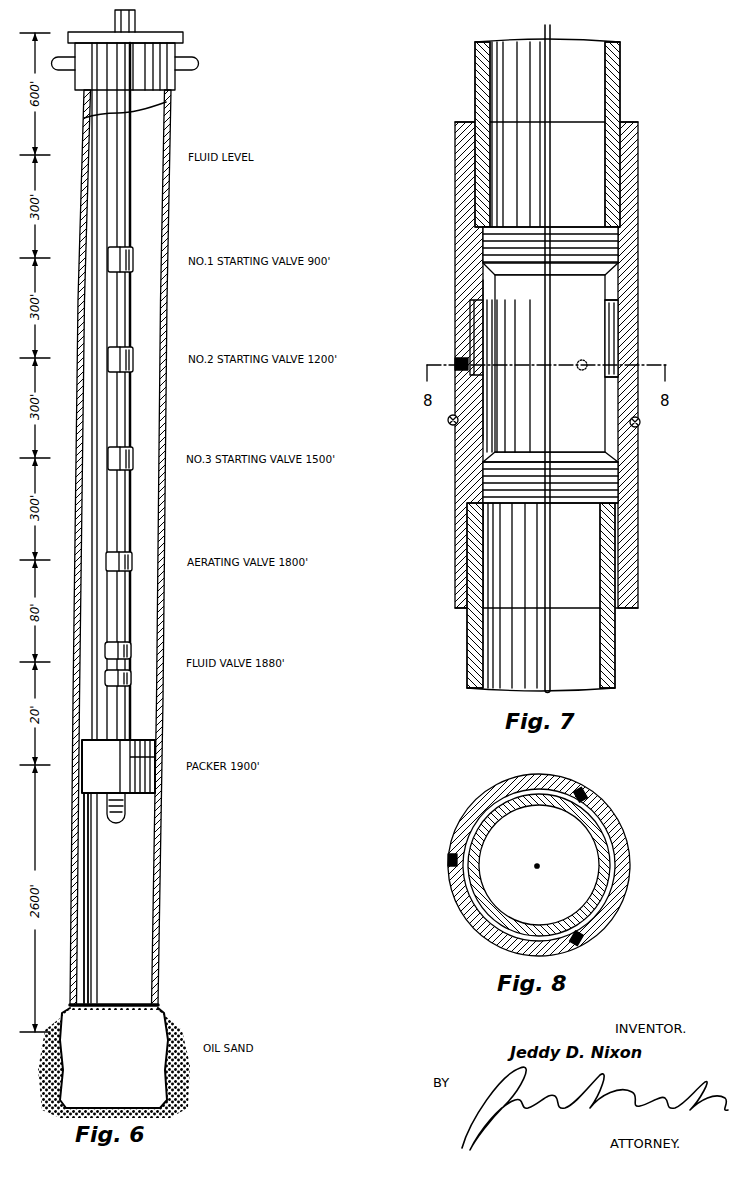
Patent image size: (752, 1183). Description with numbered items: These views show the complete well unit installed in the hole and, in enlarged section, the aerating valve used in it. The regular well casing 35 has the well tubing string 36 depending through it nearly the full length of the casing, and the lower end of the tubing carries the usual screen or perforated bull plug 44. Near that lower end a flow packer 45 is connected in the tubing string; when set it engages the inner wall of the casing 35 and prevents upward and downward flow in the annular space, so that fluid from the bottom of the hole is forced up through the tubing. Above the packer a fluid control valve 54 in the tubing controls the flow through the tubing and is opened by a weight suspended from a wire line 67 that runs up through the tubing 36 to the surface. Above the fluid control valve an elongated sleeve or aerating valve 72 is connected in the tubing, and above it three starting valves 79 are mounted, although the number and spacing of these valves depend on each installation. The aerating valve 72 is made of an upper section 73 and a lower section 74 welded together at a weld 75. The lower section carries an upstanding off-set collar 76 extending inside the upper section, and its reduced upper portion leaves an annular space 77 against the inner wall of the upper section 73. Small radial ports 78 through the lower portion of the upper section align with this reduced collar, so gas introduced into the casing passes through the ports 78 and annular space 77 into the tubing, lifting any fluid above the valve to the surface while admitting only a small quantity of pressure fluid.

In FIG. 6, the well casing 35 is at (155, 848).
In FIG. 6, the well tubing string 36 is at (118, 130).
In FIG. 7, the well tubing string 36 is at (622, 74).
In FIG. 6, the starting valve 79 is at (133, 261).
In FIG. 6, the aerating valve 72 is at (132, 561).
In FIG. 7, the aerating valve 72 is at (460, 327).
In FIG. 6, the fluid control valve 54 is at (130, 675).
In FIG. 6, the flow packer 45 is at (157, 748).
In FIG. 6, the perforated bull plug 44 is at (108, 825).
In FIG. 7, the upper section of aerating valve 73 is at (625, 278).
In FIG. 8, the upper section of aerating valve 73 is at (622, 860).
In FIG. 7, the lower section of aerating valve 74 is at (633, 493).
In FIG. 7, the weld 75 is at (450, 422).
In FIG. 7, the off-set collar 76 is at (620, 340).
In FIG. 8, the off-set collar 76 is at (598, 857).
In FIG. 7, the annular space 77 is at (468, 305).
In FIG. 7, the radial ports 78 is at (462, 360).
In FIG. 8, the radial ports 78 is at (585, 793).
In FIG. 7, the wire line 67 is at (543, 621).
In FIG. 8, the wire line 67 is at (537, 870).